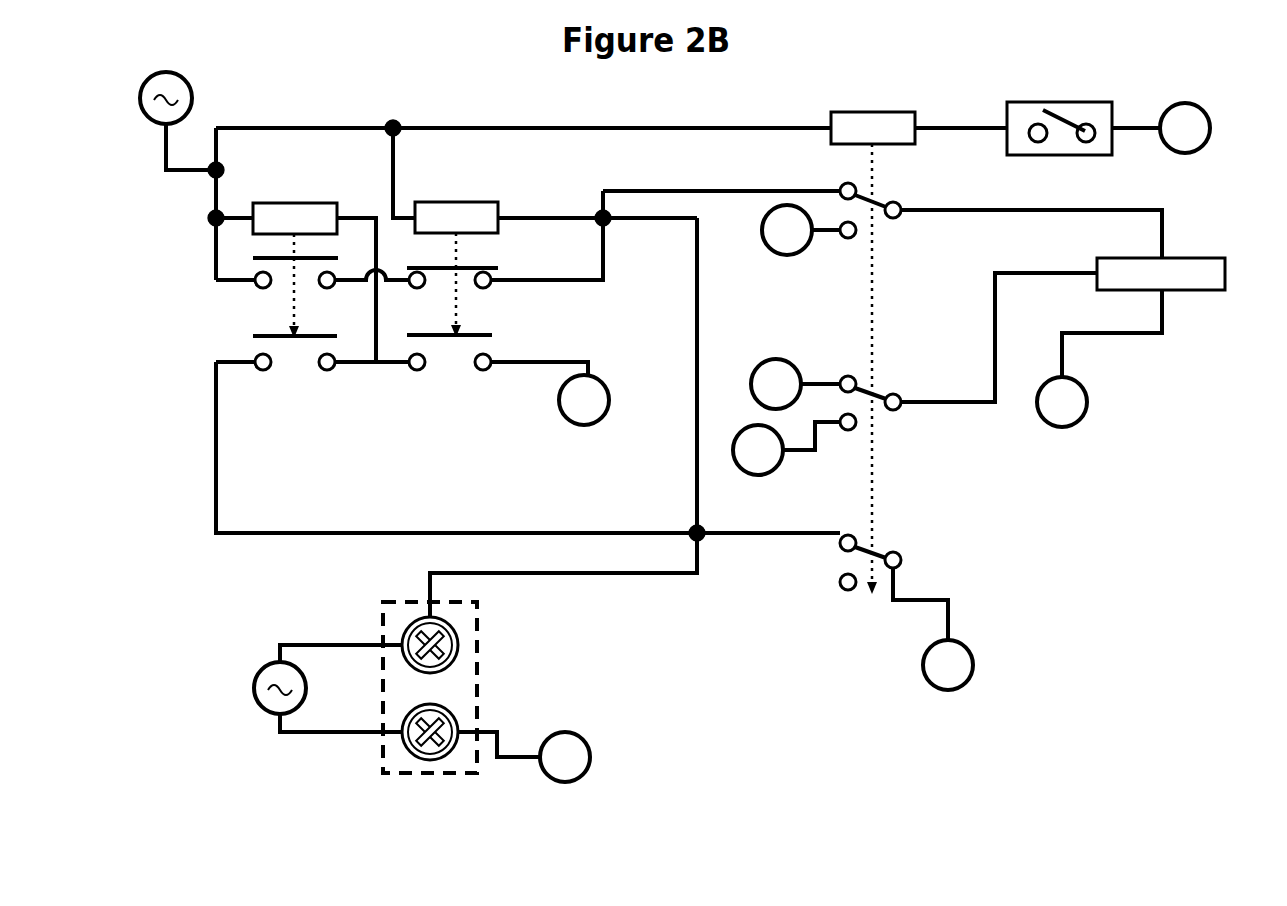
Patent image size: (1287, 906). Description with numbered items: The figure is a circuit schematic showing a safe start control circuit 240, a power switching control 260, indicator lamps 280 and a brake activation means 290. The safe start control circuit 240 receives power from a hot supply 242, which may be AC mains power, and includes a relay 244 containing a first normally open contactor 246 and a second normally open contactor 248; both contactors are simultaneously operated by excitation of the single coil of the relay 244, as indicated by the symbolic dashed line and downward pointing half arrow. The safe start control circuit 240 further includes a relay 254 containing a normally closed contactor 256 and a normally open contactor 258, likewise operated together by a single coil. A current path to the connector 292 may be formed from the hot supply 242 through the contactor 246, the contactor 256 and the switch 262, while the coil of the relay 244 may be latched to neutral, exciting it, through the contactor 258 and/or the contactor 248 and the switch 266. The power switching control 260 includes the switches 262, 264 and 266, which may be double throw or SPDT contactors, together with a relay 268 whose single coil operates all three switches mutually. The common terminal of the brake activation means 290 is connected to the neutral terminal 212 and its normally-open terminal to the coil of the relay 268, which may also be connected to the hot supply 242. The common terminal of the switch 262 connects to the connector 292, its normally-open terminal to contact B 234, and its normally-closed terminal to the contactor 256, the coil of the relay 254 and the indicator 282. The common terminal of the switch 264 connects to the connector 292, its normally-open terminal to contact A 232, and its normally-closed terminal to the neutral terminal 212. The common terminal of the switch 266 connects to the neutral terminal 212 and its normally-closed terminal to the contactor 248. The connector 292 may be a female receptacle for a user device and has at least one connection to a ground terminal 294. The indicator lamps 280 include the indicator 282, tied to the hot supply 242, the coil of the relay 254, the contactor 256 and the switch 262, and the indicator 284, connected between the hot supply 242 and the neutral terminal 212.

The safe start control circuit 240 is at (444, 72).
The hot supply 242 is at (235, 42).
The relay 244 is at (330, 158).
The first normally open contactor 246 is at (255, 305).
The second normally open contactor 248 is at (260, 377).
The relay 254 is at (528, 162).
The normally closed contactor 256 is at (497, 295).
The normally open contactor 258 is at (418, 383).
The neutral terminal 212 is at (565, 448).
The relay 268 is at (925, 75).
The brake activation means 290 is at (1112, 68).
The connector 292 is at (1243, 222).
The switch 262 is at (880, 247).
The contact B 234 is at (802, 263).
The switch 264 is at (935, 365).
The ground terminal 294 is at (1092, 375).
The contact A 232 is at (768, 490).
The switch 266 is at (935, 512).
The power switching control 260 is at (1005, 542).
The indicator lamps 280 is at (585, 690).
The indicator 282 is at (497, 628).
The indicator 284 is at (440, 766).